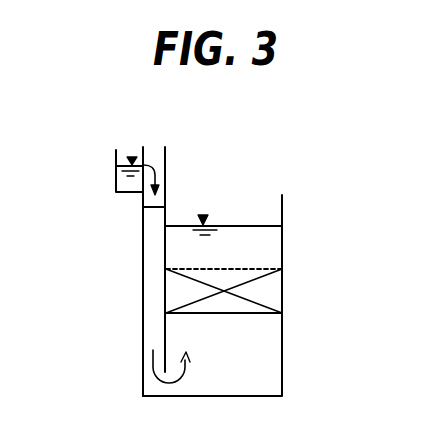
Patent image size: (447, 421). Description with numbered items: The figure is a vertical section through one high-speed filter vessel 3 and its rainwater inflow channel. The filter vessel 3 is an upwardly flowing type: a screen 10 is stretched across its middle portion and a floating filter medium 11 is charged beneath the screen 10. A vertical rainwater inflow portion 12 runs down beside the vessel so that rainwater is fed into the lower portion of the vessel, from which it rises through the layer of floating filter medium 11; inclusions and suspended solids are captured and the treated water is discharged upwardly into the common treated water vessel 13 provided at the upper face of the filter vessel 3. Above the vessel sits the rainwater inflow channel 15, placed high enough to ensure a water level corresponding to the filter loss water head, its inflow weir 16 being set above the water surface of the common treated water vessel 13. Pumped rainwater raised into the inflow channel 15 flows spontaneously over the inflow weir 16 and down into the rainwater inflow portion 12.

The high-speed filter vessel 3 is at (258, 357).
The screen 10 is at (232, 268).
The floating filter medium 11 is at (265, 293).
The rainwater inflow portion 12 is at (157, 305).
The common treated water vessel 13 is at (265, 247).
The rainwater inflow channel 15 is at (123, 192).
The inflow weir 16 is at (147, 160).